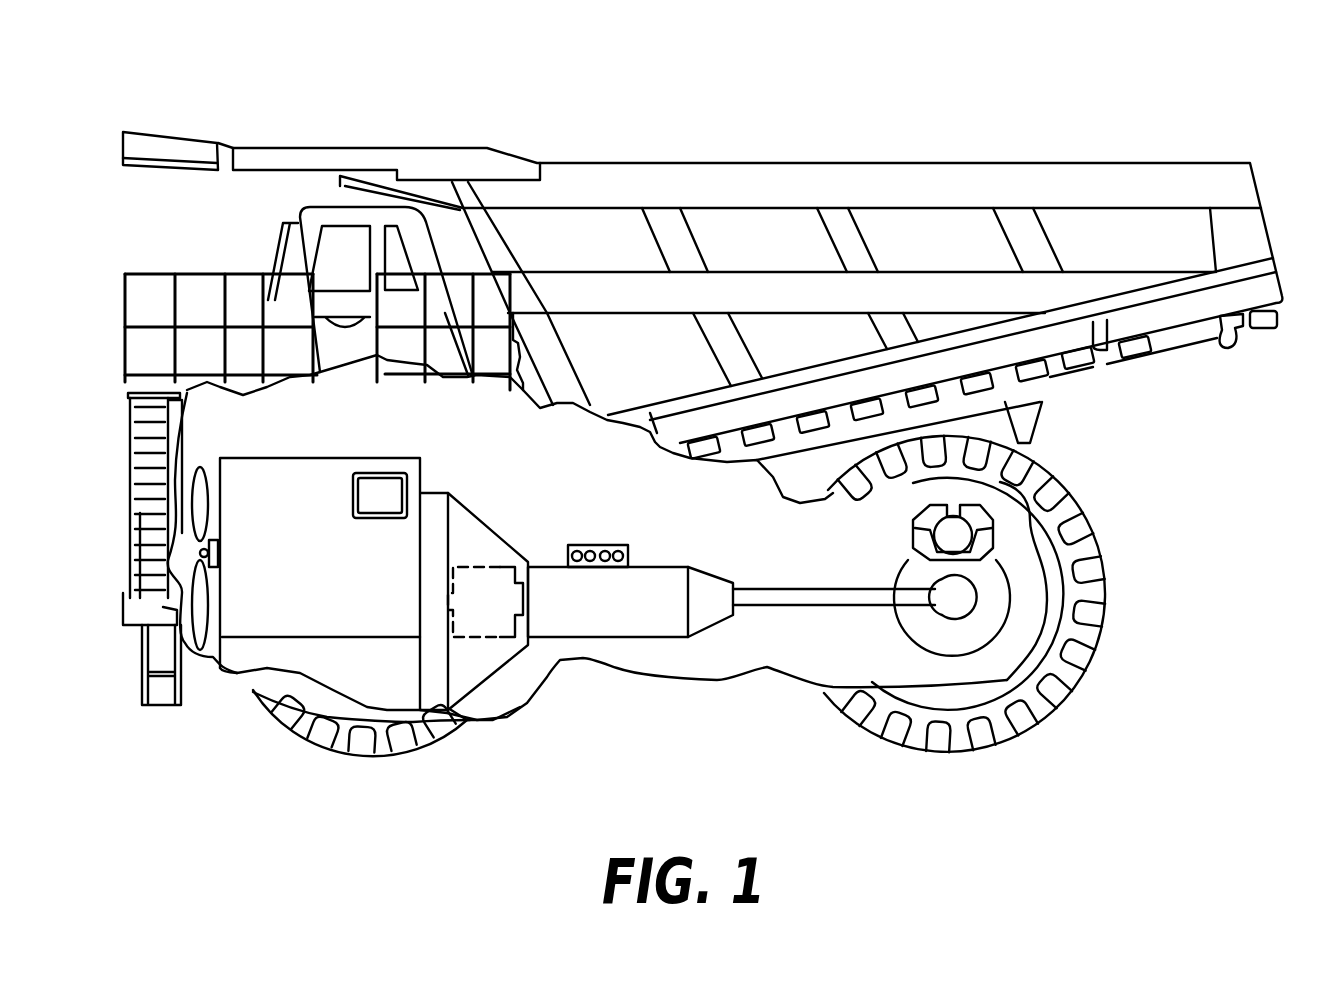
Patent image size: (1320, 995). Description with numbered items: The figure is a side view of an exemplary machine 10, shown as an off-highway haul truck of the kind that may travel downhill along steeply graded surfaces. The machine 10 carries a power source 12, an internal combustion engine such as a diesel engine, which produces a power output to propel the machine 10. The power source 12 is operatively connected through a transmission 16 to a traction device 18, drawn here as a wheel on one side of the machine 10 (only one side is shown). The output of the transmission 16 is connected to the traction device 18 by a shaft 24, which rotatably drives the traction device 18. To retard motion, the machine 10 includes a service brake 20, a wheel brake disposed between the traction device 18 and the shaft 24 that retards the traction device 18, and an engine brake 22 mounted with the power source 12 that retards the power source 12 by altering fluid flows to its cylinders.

The machine 10 is at (810, 133).
The power source 12 is at (303, 568).
The transmission 16 is at (593, 615).
The traction device 18 is at (1077, 528).
The service brake 20 is at (977, 515).
The engine brake 22 is at (367, 509).
The shaft 24 is at (780, 607).